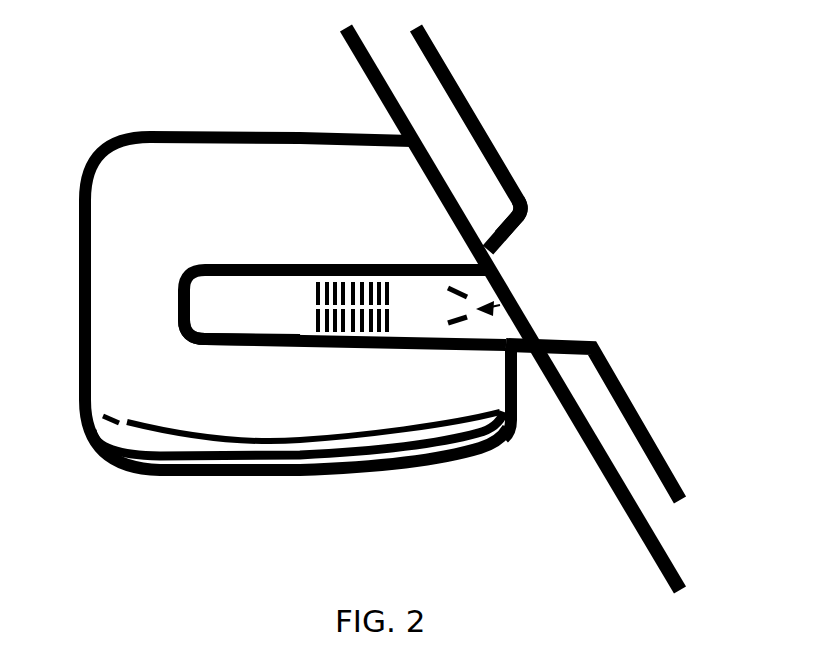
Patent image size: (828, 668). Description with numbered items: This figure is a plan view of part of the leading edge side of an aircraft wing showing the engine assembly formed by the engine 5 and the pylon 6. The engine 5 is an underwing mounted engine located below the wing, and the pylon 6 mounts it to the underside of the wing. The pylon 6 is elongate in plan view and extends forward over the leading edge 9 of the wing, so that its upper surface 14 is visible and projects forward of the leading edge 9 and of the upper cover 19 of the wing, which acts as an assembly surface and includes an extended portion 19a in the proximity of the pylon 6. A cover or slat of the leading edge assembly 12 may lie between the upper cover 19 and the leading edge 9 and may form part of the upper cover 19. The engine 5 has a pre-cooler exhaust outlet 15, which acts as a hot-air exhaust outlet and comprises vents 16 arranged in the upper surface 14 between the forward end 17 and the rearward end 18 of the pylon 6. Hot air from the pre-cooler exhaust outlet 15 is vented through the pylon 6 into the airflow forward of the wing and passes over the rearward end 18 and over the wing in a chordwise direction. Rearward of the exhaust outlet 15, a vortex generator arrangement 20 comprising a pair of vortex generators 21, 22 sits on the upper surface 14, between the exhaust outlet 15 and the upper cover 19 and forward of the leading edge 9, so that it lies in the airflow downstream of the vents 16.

The engine 5 is at (197, 158).
The pylon 6 is at (257, 292).
The leading edge 9 is at (352, 55).
The leading edge assembly 12 is at (437, 105).
The upper surface 14 is at (258, 320).
The pre-cooler exhaust outlet 15 is at (353, 315).
The vents 16 is at (343, 290).
The forward end 17 is at (225, 323).
The rearward end 18 is at (517, 348).
The upper cover 19 is at (583, 325).
The extended portion 19a is at (530, 240).
The vortex generator arrangement 20 is at (515, 293).
The vortex generator 21 is at (452, 288).
The vortex generator 22 is at (455, 323).